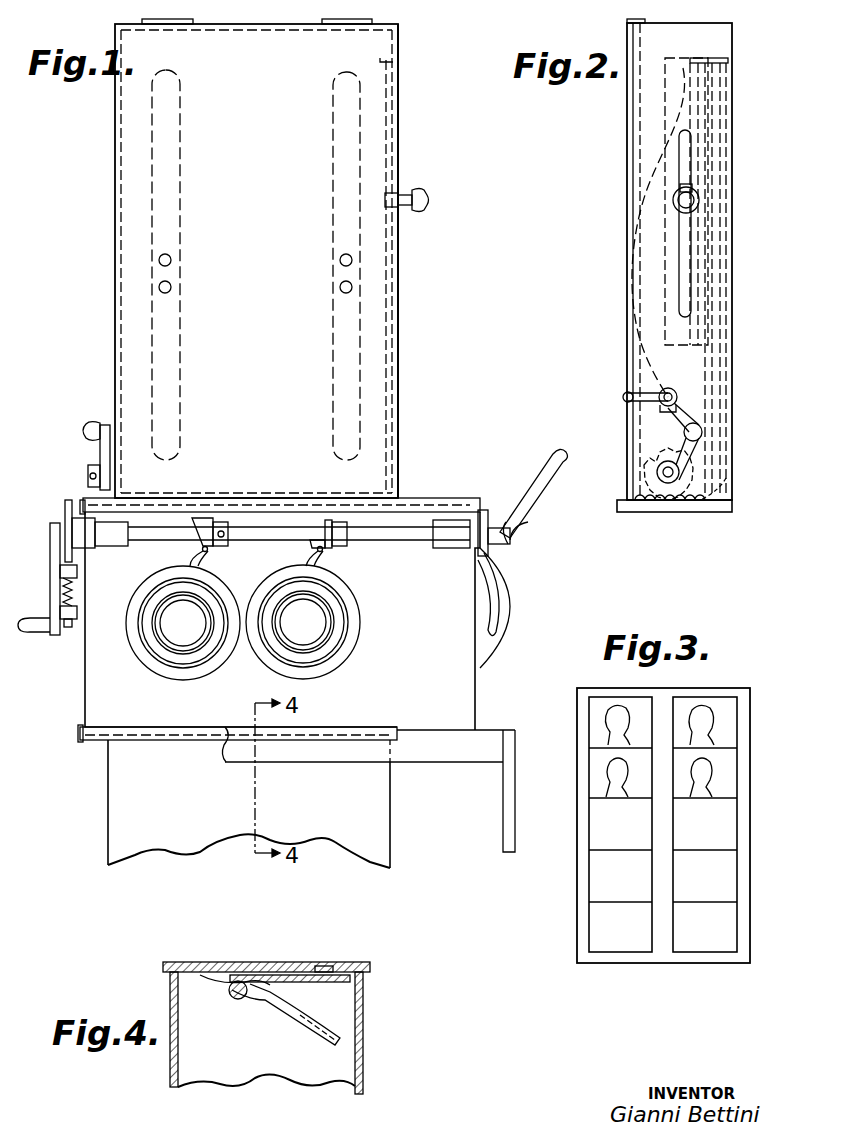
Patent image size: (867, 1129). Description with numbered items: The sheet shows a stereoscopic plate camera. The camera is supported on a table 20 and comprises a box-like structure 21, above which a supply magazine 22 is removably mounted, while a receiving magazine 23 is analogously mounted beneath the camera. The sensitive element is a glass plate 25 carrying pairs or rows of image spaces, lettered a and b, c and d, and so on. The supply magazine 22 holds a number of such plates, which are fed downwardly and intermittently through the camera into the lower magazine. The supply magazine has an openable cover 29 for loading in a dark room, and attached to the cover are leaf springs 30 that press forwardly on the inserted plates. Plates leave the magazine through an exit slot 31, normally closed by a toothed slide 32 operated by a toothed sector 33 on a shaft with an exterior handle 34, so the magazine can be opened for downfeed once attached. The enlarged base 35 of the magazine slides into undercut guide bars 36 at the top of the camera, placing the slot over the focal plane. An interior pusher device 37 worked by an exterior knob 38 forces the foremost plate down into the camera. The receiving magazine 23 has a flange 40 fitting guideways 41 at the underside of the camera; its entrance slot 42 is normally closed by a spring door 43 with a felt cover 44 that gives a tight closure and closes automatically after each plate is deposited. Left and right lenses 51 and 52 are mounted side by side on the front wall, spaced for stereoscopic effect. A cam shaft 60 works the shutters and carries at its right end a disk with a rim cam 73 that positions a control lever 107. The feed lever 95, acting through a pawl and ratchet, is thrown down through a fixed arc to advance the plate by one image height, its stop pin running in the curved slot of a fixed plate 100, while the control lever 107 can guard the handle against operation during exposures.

In FIG. 1, the table 20 is at (490, 765).
In FIG. 1, the box-like structure 21 is at (282, 621).
In FIG. 1, the supply magazine 22 is at (256, 258).
In FIG. 2, the supply magazine 22 is at (627, 110).
In FIG. 1, the receiving magazine 23 is at (249, 804).
In FIG. 4, the receiving magazine 23 is at (362, 1075).
In FIG. 2, the glass plate 25 is at (710, 372).
In FIG. 3, the glass plate 25 is at (577, 910).
In FIG. 2, the openable cover 29 is at (633, 163).
In FIG. 1, the leaf springs 30 is at (333, 198).
In FIG. 2, the leaf springs 30 is at (640, 190).
In FIG. 2, the exit slot 31 is at (700, 512).
In FIG. 2, the toothed slide 32 is at (728, 480).
In FIG. 2, the toothed sector 33 is at (648, 483).
In FIG. 1, the exterior handle 34 is at (85, 428).
In FIG. 2, the exterior handle 34 is at (668, 450).
In FIG. 2, the enlarged base 35 is at (735, 507).
In FIG. 1, the undercut guide bars 36 is at (398, 507).
In FIG. 1, the interior pusher device 37 is at (398, 128).
In FIG. 1, the exterior knob 38 is at (425, 198).
In FIG. 4, the flange 40 is at (372, 970).
In FIG. 1, the guideways 41 is at (88, 742).
In FIG. 4, the entrance slot 42 is at (325, 965).
In FIG. 4, the spring door 43 is at (305, 985).
In FIG. 4, the felt cover 44 is at (322, 965).
In FIG. 1, the left lens 51 is at (152, 662).
In FIG. 1, the right lens 52 is at (338, 660).
In FIG. 1, the cam shaft 60 is at (385, 541).
In FIG. 1, the rim cam 73 is at (484, 512).
In FIG. 1, the lever 95 is at (557, 455).
In FIG. 1, the fixed plate 100 is at (512, 588).
In FIG. 1, the control lever 107 is at (520, 530).